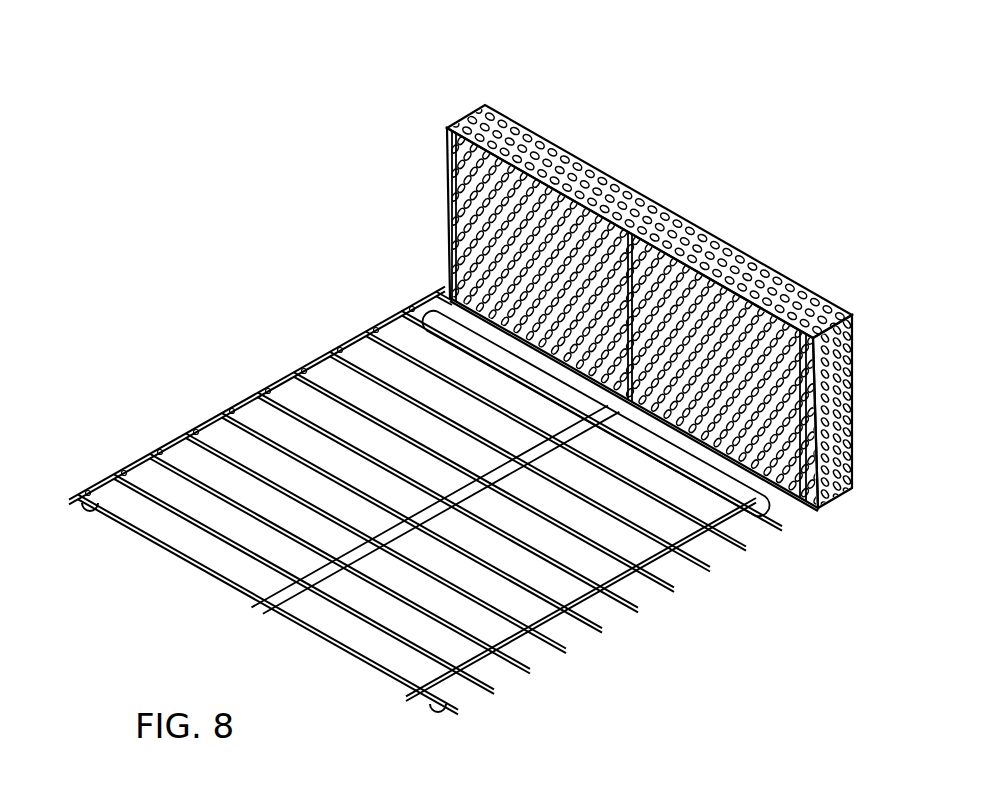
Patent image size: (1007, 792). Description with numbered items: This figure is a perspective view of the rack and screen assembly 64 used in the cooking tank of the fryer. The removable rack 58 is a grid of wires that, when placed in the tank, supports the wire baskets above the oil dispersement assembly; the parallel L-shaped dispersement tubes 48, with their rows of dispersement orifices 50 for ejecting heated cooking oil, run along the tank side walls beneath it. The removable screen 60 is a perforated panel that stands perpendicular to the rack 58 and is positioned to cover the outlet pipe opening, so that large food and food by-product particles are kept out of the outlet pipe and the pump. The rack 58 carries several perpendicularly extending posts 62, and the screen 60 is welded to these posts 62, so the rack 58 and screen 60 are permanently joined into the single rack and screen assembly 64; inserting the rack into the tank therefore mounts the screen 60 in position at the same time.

The dispersement tube 48 is at (175, 443).
The dispersement orifice 50 is at (91, 497).
The rack 58 is at (395, 678).
The screen 60 is at (600, 308).
The post 62 is at (447, 183).
The rack and screen assembly 64 is at (423, 534).